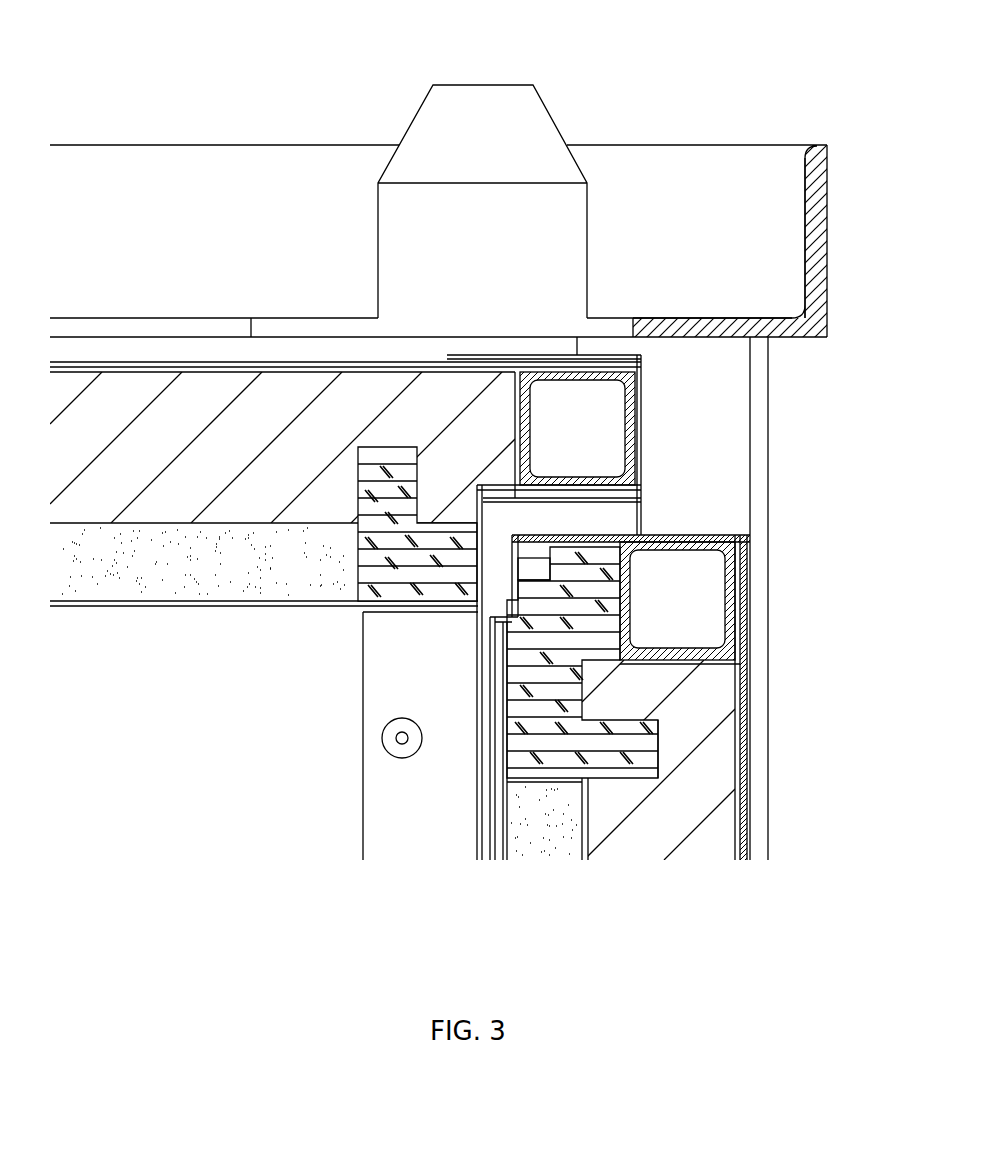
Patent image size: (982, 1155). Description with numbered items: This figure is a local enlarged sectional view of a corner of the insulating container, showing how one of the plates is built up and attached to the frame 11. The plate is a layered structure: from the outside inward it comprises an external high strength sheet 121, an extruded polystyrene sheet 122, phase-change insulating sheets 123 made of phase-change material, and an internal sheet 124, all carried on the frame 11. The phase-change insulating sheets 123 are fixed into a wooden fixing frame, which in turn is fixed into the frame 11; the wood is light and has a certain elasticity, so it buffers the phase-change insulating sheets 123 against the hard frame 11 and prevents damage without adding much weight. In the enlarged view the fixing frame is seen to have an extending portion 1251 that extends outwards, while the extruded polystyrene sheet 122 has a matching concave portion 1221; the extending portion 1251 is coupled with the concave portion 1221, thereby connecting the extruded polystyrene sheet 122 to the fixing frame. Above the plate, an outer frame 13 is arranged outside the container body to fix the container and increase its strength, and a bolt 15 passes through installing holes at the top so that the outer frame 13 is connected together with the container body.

The frame 11 is at (708, 603).
The outer frame 13 is at (693, 190).
The bolts 15 is at (493, 117).
The external high strength sheet 121 is at (740, 676).
The extruded polystyrene sheet 122 is at (630, 838).
The phase-change insulating sheets 123 is at (540, 840).
The internal sheet 124 is at (488, 800).
The concave portion 1221 is at (660, 777).
The extending portion 1251 is at (658, 745).